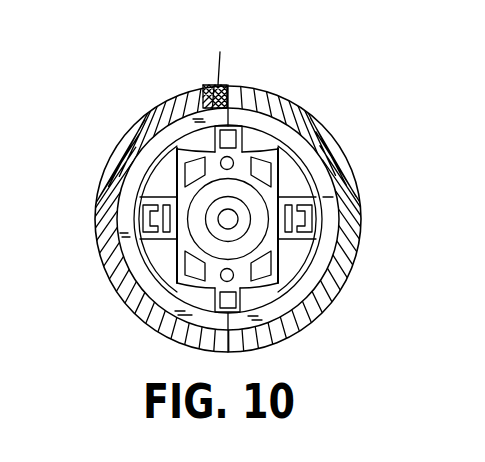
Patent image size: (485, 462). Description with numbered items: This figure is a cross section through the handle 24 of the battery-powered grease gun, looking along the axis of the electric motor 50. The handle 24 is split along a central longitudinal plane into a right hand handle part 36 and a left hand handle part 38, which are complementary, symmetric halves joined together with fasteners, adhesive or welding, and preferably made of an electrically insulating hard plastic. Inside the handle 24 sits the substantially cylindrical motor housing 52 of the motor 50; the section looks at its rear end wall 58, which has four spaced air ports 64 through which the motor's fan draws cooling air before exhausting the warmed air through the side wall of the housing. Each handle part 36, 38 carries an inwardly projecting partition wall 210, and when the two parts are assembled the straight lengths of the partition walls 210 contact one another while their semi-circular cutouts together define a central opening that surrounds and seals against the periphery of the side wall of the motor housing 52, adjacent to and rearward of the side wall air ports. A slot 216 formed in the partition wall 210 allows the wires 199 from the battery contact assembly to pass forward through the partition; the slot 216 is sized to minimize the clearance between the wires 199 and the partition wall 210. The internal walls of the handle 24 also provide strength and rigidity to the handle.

The handle 24 is at (359, 295).
The right hand handle part 36 is at (359, 193).
The left hand handle part 38 is at (110, 172).
The electric motor 50 is at (298, 142).
The motor housing 52 is at (325, 158).
The rear end wall 58 is at (174, 168).
The air ports 64 is at (190, 164).
The wires 199 is at (235, 57).
The partition wall 210 is at (128, 204).
The slot 216 is at (205, 85).